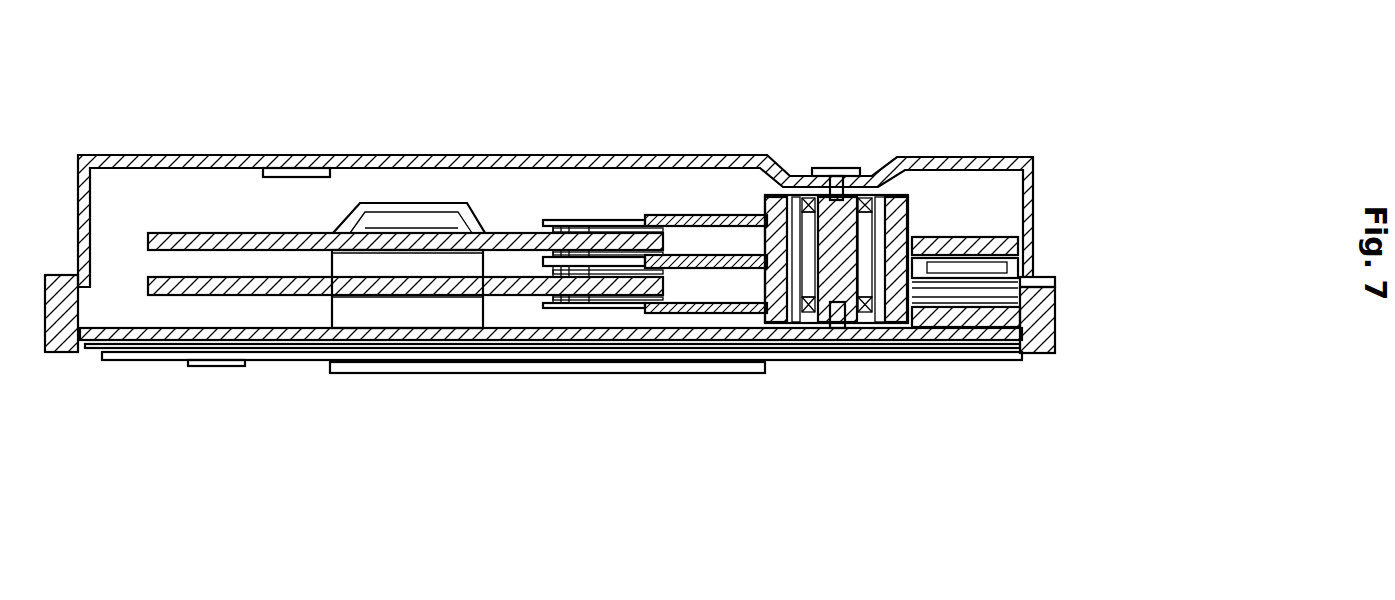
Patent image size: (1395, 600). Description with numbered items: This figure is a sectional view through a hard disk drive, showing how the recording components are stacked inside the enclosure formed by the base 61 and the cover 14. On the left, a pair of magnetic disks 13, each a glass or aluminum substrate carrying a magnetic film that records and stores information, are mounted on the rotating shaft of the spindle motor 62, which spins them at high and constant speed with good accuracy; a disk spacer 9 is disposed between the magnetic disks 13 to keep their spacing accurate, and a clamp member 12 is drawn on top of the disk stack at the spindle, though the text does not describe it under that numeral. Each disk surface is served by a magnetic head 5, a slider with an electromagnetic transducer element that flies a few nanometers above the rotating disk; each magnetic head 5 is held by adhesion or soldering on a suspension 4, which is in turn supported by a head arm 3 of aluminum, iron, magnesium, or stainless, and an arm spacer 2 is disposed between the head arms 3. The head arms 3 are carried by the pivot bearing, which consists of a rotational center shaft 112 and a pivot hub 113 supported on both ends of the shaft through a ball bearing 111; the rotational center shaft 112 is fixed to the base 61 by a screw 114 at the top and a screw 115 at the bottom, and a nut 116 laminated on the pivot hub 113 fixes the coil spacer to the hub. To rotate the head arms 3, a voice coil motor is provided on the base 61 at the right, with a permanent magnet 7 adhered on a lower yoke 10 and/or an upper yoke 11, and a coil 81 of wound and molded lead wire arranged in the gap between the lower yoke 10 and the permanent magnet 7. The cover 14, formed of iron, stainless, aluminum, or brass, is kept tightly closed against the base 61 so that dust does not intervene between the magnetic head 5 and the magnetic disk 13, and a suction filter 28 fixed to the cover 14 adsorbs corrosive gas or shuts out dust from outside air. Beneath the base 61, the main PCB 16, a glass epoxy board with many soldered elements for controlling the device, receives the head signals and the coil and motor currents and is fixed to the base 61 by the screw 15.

The arm spacer 2 is at (925, 215).
The head arm 3 is at (712, 303).
The suspension 4 is at (603, 228).
The magnetic head 5 is at (567, 228).
The permanent magnet 7 is at (1035, 242).
The disk spacer 9 is at (347, 375).
The lower yoke 10 is at (993, 348).
The upper yoke 11 is at (1005, 236).
The disk clamp 12 is at (398, 203).
The magnetic disk 13 is at (250, 277).
The cover 14 is at (127, 157).
The screw 15 is at (203, 368).
The main PCB (printed circuit board) 16 is at (917, 362).
The suction filter 28 is at (296, 157).
The base 61 is at (1057, 313).
The spindle motor 62 is at (407, 375).
The coil 81 is at (1035, 270).
The ball bearing 111 is at (795, 195).
The rotational center shaft 112 is at (807, 348).
The pivot hub 113 is at (905, 195).
The screw 114 is at (840, 168).
The screw 115 is at (833, 348).
The nut 116 is at (737, 345).